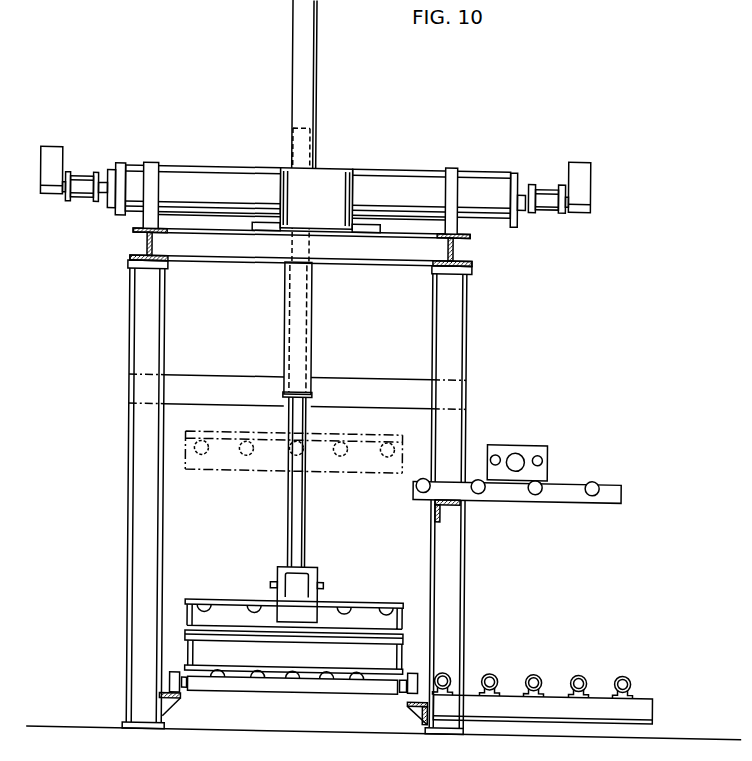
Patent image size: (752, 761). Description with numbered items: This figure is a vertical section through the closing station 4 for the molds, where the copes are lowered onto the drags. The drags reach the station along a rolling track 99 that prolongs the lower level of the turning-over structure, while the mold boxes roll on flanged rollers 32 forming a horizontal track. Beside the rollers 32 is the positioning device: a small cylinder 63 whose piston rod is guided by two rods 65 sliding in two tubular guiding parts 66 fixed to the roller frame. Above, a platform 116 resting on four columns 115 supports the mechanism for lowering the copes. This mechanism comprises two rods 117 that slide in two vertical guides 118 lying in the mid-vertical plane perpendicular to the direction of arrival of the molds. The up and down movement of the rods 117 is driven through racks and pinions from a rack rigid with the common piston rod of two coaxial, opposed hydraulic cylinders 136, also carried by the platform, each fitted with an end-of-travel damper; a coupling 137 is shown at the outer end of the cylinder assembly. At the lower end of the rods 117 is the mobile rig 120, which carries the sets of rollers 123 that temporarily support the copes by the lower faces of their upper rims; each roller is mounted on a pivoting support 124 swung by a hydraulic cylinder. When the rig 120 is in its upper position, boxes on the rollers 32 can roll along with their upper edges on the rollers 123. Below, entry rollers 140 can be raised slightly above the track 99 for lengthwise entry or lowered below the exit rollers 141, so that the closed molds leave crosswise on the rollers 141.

The closing station 4 is at (470, 136).
The flanged rollers 32 is at (557, 475).
The small cylinder 63 is at (519, 446).
The rods 65 is at (542, 448).
The tubular guiding parts 66 is at (496, 448).
The rolling track 99 is at (535, 673).
The columns 115 is at (147, 316).
The platform 116 is at (378, 261).
The rods 117 is at (304, 517).
The vertical guides 118 is at (290, 94).
The mobile rig 120 is at (239, 595).
The rollers 123 is at (290, 438).
The support 124 is at (394, 616).
The hydraulic cylinders 136 is at (231, 172).
The coupling 137 is at (82, 177).
The entry rollers 140 is at (348, 677).
The exit rollers 141 is at (183, 693).